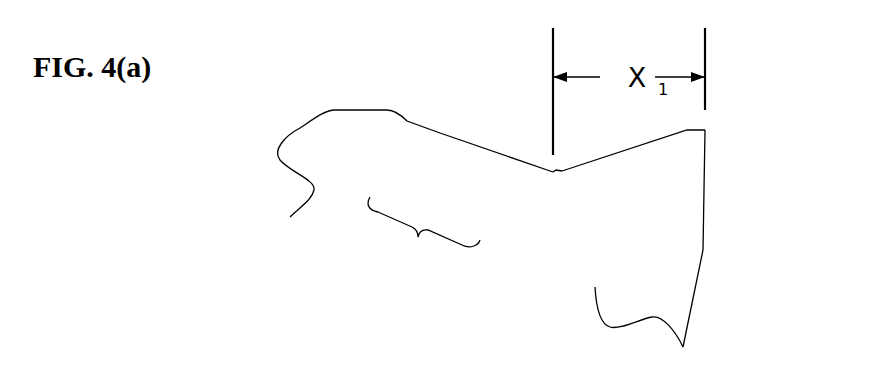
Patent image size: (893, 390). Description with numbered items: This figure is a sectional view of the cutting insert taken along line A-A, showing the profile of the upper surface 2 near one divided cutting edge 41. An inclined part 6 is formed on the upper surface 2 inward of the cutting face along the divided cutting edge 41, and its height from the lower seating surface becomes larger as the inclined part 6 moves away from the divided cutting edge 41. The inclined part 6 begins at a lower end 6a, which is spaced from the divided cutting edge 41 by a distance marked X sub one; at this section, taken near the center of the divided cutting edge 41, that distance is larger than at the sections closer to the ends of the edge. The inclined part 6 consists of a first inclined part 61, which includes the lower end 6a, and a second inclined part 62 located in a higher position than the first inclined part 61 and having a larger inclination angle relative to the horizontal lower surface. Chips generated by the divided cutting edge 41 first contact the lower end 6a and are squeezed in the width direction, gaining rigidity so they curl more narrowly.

The upper surface 2 is at (612, 157).
The inclined part 6 is at (424, 231).
The lower end 6a is at (553, 172).
The first inclined part 61 is at (478, 148).
The second inclined part 62 is at (407, 122).
The divided cutting edge 41 is at (705, 130).